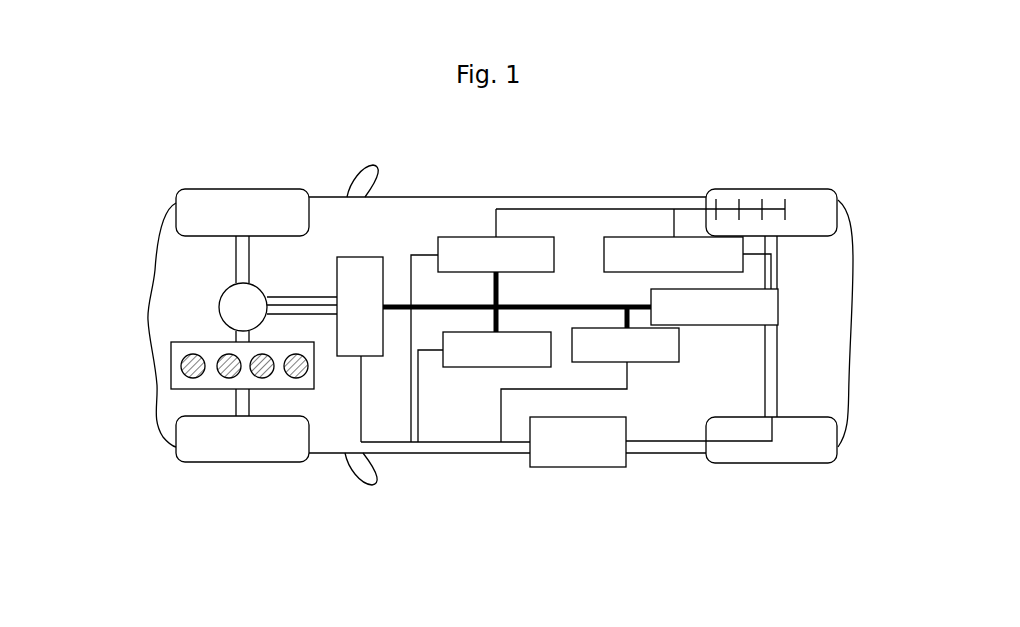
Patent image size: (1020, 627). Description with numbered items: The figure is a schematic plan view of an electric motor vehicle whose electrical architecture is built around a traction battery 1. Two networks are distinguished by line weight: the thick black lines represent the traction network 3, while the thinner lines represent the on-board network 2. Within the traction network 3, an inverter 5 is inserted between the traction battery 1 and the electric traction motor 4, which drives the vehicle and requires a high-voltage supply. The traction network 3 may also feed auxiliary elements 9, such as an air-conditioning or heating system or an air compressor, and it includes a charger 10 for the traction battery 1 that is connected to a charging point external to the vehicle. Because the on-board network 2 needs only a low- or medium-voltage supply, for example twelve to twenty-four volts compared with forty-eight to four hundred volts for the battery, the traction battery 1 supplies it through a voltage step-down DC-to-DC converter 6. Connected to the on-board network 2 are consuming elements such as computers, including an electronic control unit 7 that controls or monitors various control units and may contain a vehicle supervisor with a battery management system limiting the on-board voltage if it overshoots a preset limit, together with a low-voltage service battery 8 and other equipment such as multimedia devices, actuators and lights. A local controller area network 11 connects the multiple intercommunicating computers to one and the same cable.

The traction battery 1 is at (497, 349).
The on-board network 2 is at (527, 209).
The traction network 3 is at (582, 300).
The electric traction motor 4 is at (278, 307).
The inverter 5 is at (360, 306).
The voltage step-down DC-to-DC converter 6 is at (496, 240).
The electronic control unit 7 is at (651, 442).
The service battery 8 is at (687, 249).
The auxiliary elements 9 is at (714, 307).
The charger 10 is at (590, 385).
The local controller area network 11 is at (414, 443).